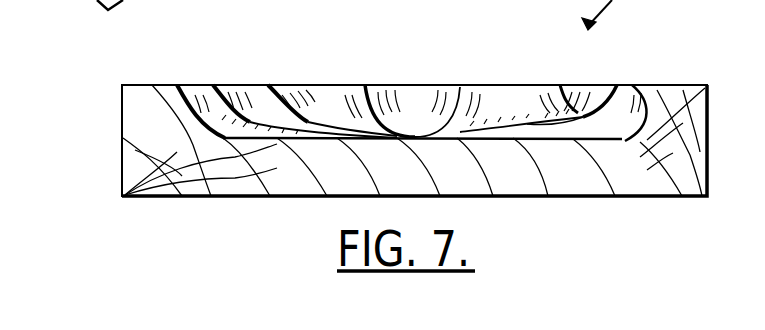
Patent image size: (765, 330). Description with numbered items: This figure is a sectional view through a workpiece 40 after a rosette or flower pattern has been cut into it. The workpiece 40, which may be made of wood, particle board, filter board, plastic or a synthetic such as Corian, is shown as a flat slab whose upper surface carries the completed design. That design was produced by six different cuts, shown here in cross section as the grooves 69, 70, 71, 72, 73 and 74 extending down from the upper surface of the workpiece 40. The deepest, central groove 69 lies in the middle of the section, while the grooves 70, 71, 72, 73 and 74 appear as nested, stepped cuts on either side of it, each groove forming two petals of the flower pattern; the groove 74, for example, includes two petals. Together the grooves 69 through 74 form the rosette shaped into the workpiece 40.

The workpiece 40 is at (122, 137).
The groove 69 is at (400, 93).
The groove 70 is at (500, 97).
The groove 71 is at (587, 97).
The groove 72 is at (197, 97).
The groove 73 is at (253, 97).
The groove 74 is at (322, 95).